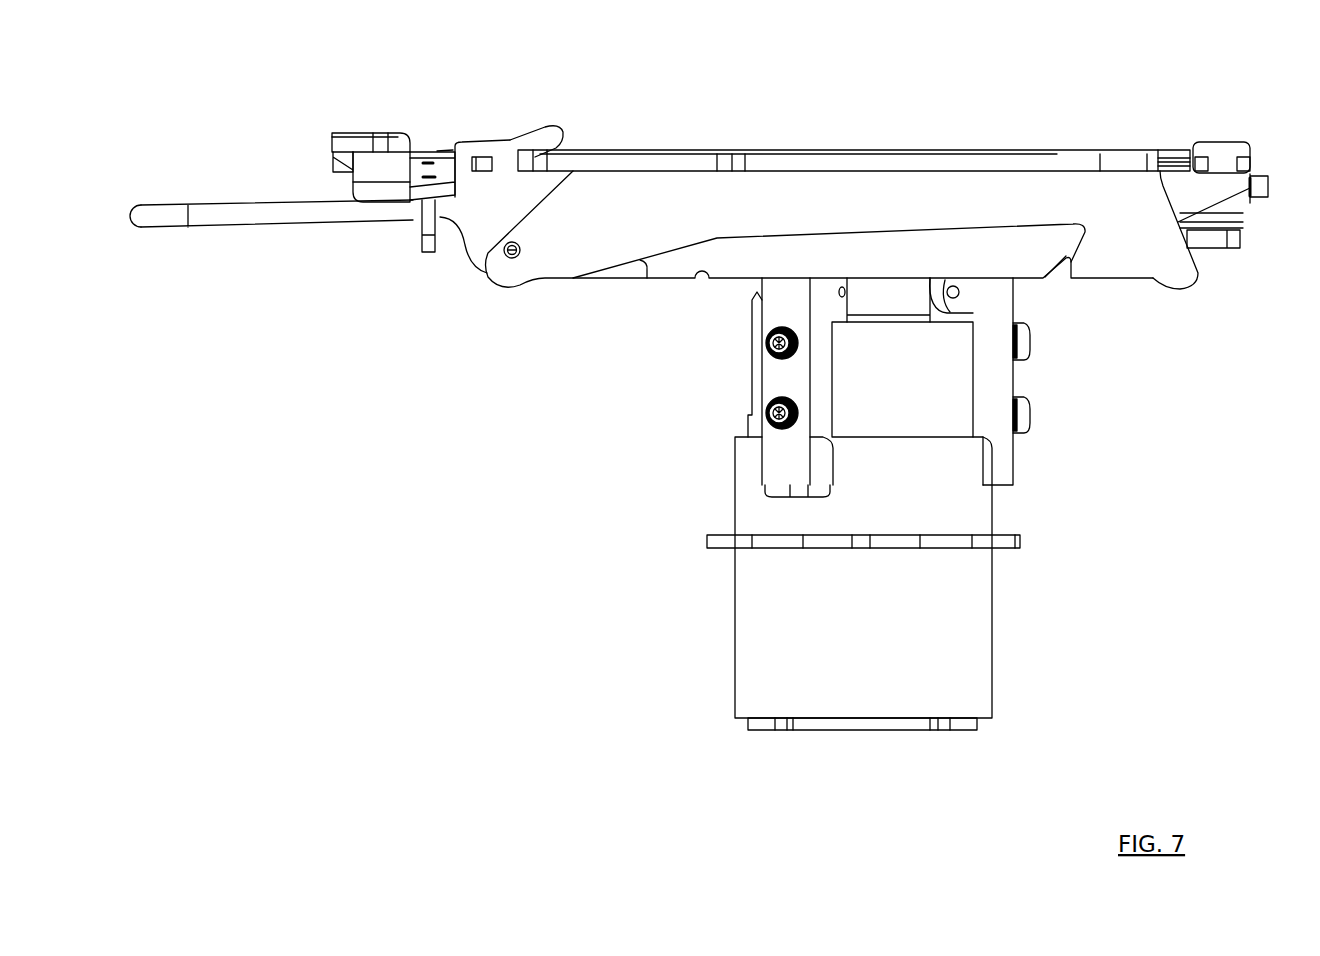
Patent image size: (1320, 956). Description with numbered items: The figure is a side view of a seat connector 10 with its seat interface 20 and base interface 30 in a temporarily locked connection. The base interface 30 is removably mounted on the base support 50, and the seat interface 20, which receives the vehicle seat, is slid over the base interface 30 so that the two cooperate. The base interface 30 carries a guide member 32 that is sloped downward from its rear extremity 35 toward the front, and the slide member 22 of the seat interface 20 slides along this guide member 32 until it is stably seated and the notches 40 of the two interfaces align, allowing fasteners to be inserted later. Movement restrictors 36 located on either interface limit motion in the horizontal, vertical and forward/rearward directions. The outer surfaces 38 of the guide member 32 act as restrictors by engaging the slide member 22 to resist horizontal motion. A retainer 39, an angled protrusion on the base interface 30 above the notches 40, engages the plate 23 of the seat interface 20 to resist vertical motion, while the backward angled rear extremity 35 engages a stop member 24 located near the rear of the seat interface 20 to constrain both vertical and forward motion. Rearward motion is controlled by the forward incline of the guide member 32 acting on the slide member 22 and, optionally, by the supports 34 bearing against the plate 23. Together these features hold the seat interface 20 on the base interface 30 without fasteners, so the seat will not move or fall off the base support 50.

The seat connector 10 is at (1039, 98).
The seat interface 20 is at (1087, 136).
The plate 23 is at (853, 167).
The slide member 22 is at (573, 243).
The notch 40 is at (505, 258).
The movement restrictor 36 is at (690, 206).
The retainer 39 is at (563, 130).
The outer surface 38 is at (477, 233).
The stop member 24 is at (1097, 262).
The rear extremity 35 is at (1063, 234).
The support 34 is at (1232, 140).
The base interface 30 is at (889, 379).
The guide member 32 is at (735, 262).
The base support 50 is at (970, 655).